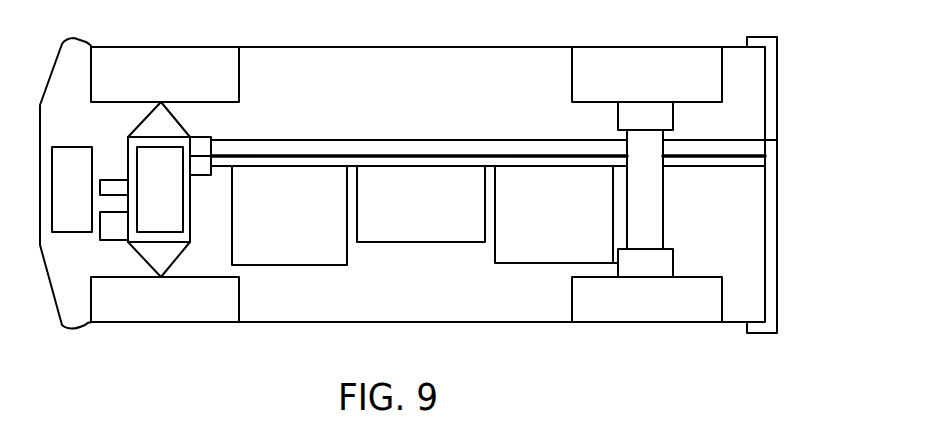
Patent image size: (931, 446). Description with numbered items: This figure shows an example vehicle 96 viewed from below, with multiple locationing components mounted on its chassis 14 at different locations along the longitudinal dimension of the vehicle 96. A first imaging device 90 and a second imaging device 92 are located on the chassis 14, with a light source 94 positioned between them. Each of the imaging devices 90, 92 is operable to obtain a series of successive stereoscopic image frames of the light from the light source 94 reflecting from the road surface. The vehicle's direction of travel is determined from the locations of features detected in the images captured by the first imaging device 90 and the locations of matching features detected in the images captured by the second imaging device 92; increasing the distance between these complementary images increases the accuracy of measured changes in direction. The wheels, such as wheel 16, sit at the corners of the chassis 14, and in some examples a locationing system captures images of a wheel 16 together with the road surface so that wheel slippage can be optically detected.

The chassis 14 is at (417, 110).
The wheel 16 is at (160, 325).
The first imaging device 90 is at (307, 267).
The second imaging device 92 is at (537, 265).
The light source 94 is at (422, 244).
The vehicle 96 is at (784, 16).